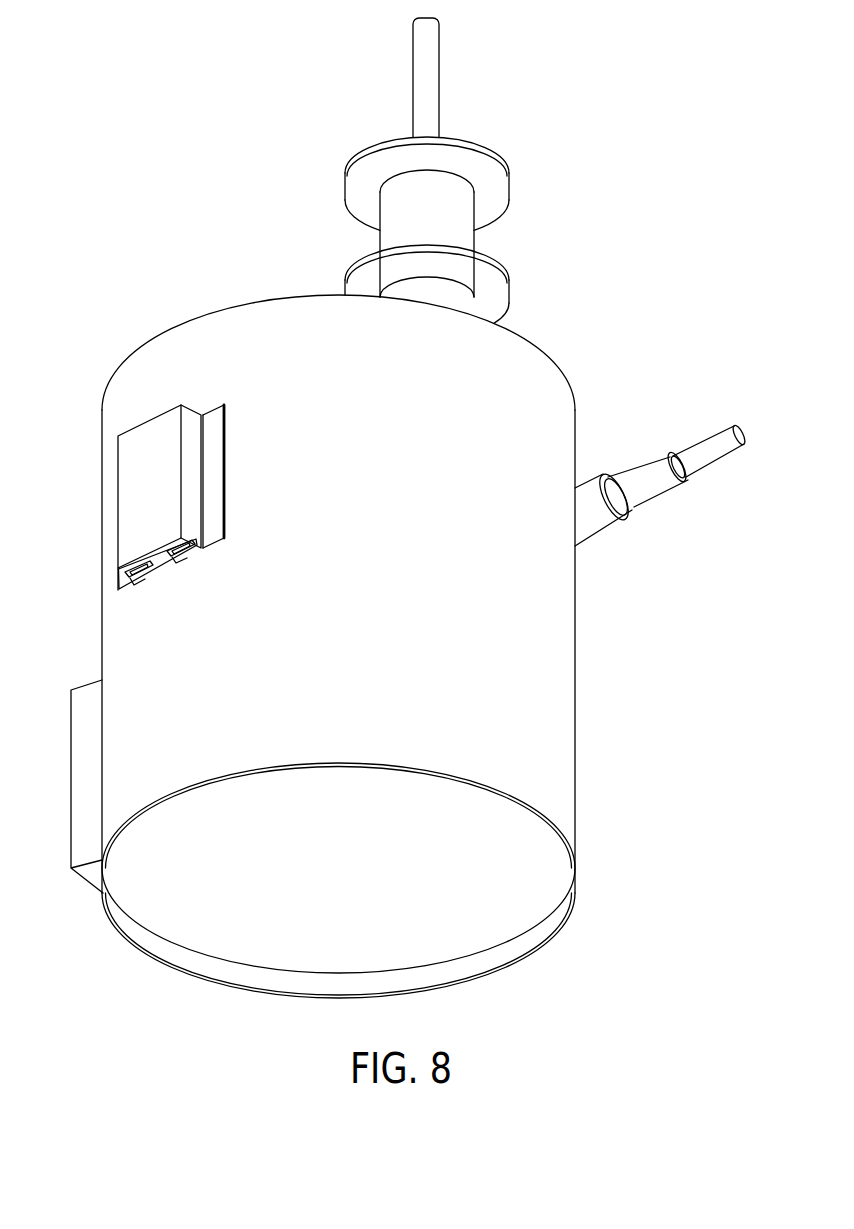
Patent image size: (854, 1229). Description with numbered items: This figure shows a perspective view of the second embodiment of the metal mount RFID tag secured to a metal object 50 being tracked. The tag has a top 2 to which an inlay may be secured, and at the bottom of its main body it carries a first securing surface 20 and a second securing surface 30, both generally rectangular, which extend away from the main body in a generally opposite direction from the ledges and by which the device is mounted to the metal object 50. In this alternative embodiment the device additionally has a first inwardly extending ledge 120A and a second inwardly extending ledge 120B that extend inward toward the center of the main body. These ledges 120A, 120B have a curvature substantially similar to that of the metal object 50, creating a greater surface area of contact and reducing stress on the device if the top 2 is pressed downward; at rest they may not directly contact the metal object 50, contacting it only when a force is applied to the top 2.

The top 2 is at (145, 493).
The first securing surface 20 is at (128, 582).
The second securing surface 30 is at (210, 490).
The metal object 50 is at (400, 495).
The first inwardly extending ledge 120A is at (145, 572).
The second inwardly extending ledge 120B is at (184, 555).